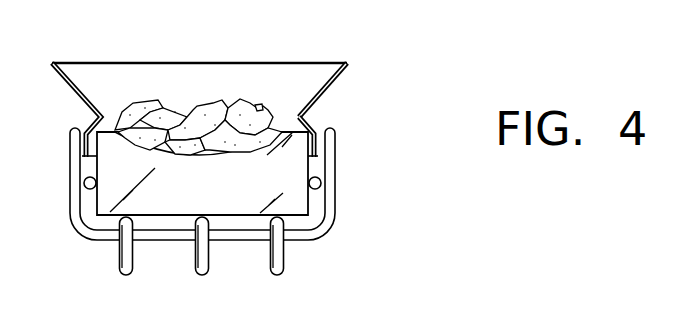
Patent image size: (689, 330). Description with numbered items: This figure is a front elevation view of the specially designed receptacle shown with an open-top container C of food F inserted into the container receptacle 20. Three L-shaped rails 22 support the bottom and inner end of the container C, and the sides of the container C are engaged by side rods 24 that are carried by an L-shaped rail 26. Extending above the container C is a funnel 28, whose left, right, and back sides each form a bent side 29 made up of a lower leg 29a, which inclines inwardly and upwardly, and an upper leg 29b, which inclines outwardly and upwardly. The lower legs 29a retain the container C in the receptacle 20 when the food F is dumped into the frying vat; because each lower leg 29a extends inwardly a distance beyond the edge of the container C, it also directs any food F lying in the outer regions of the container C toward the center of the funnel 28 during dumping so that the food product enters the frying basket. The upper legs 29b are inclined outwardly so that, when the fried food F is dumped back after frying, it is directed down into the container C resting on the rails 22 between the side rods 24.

The container receptacle 20 is at (310, 240).
The L-shaped rails 22 is at (133, 274).
The side rods 24 is at (83, 190).
The L-shaped rail 26 is at (335, 148).
The funnel 28 is at (174, 63).
The funnel side leg 29 is at (82, 102).
The lower leg 29a is at (311, 129).
The upper leg 29b is at (338, 88).
The container C is at (297, 207).
The food F is at (256, 106).